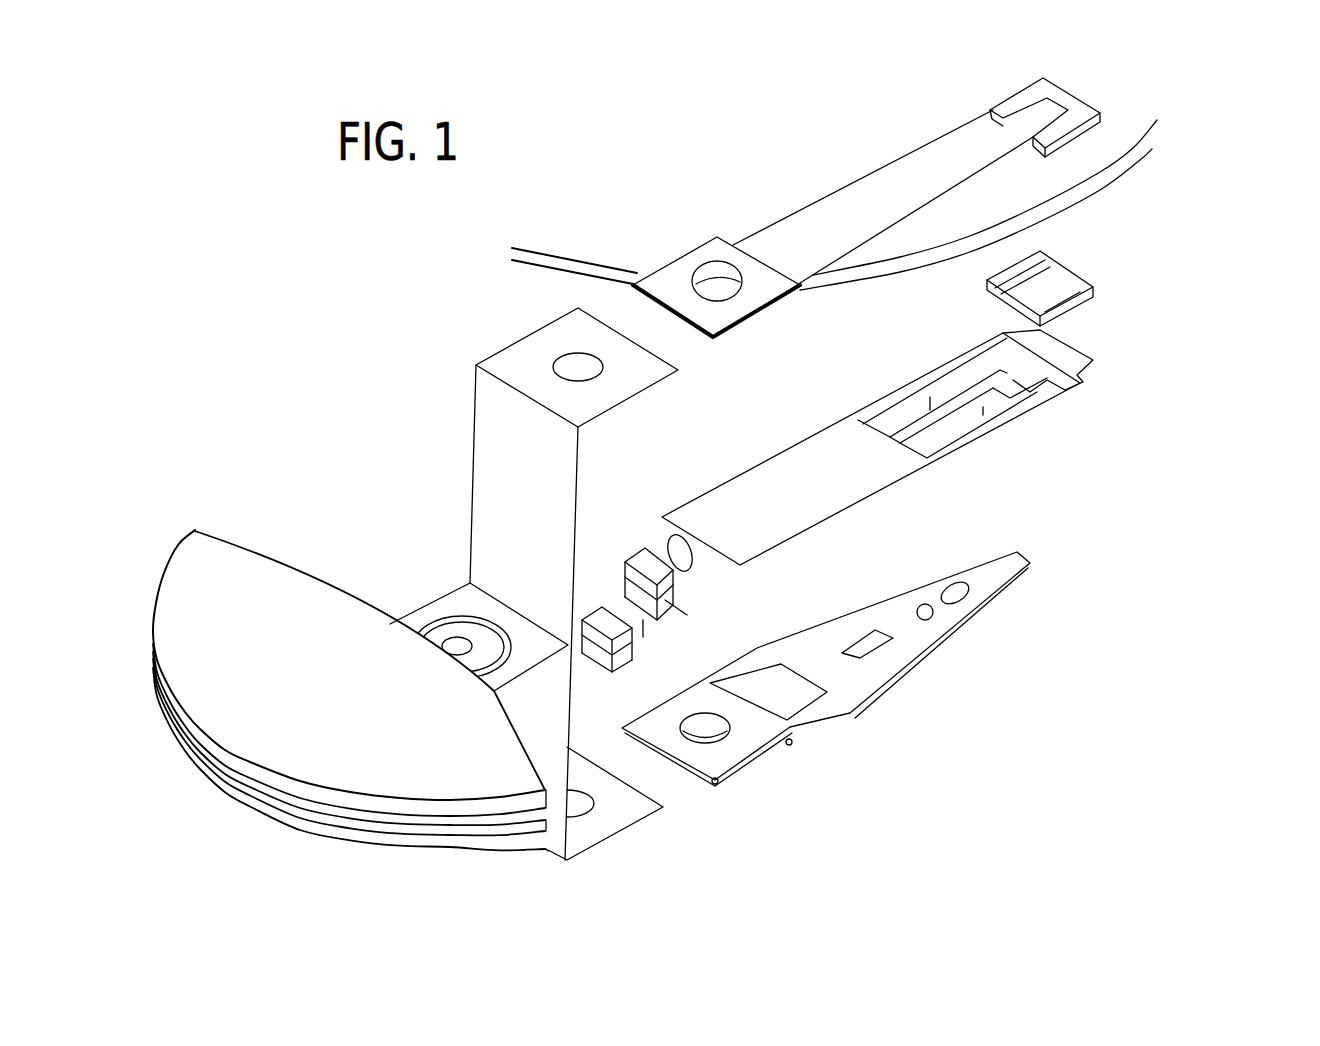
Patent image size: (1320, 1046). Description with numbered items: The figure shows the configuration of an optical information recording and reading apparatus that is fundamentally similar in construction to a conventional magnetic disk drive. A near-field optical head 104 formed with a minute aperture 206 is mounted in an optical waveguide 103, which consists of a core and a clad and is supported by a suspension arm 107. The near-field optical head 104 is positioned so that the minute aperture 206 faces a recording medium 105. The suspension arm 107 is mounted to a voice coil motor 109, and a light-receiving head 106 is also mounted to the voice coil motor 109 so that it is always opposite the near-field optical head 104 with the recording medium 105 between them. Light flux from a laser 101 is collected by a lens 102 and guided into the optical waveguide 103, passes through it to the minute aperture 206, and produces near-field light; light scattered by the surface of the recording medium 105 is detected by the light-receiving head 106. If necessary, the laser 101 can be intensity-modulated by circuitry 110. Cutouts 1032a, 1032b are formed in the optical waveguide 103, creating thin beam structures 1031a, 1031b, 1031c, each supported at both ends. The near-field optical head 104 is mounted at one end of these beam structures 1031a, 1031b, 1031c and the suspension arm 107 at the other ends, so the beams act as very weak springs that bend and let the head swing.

The laser 101 is at (826, 669).
The lens 102 is at (692, 569).
The optical waveguide 103 is at (871, 449).
The both end-supported beam structure 1031a is at (1033, 401).
The both end-supported beam structure 1031b is at (1015, 401).
The both end-supported beam structure 1031c is at (1000, 400).
The cutout 1032a is at (1045, 458).
The cutout 1032b is at (1019, 471).
The near-field optical head 104 is at (1094, 280).
The recording medium 105 is at (1032, 205).
The light-receiving head 106 is at (1009, 172).
The suspension arm 107 is at (826, 669).
The voice coil motor 109 is at (350, 627).
The circuitry 110 is at (603, 652).
The minute aperture 206 is at (1087, 267).